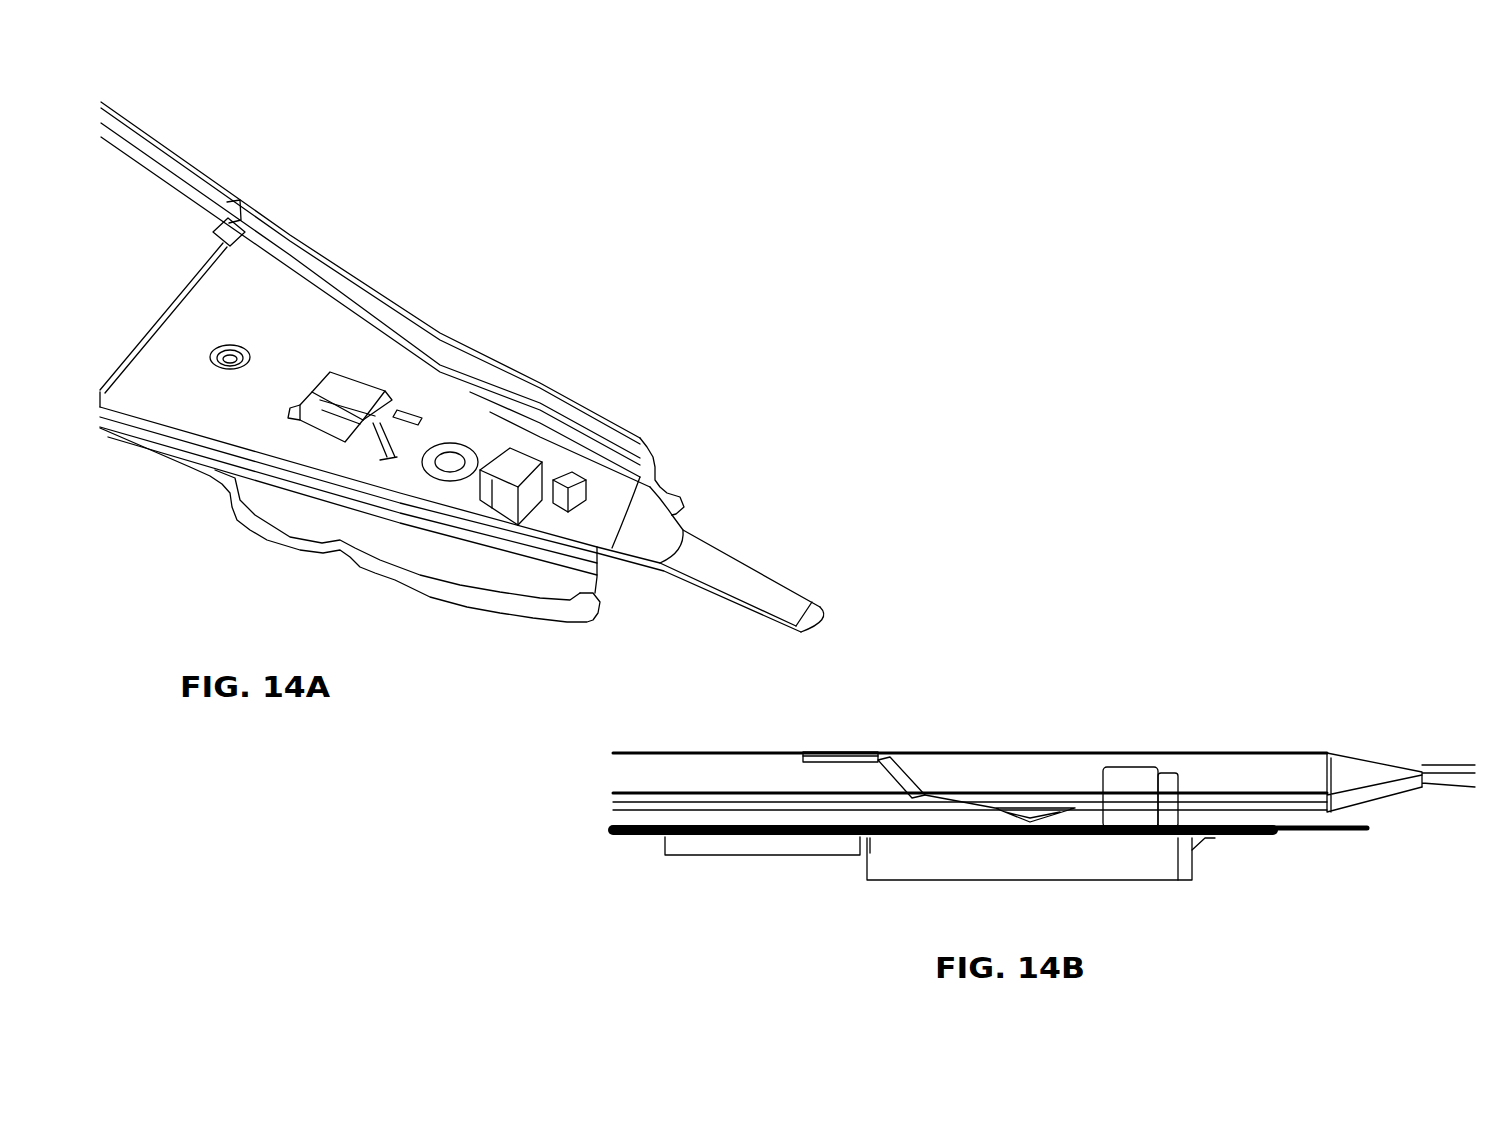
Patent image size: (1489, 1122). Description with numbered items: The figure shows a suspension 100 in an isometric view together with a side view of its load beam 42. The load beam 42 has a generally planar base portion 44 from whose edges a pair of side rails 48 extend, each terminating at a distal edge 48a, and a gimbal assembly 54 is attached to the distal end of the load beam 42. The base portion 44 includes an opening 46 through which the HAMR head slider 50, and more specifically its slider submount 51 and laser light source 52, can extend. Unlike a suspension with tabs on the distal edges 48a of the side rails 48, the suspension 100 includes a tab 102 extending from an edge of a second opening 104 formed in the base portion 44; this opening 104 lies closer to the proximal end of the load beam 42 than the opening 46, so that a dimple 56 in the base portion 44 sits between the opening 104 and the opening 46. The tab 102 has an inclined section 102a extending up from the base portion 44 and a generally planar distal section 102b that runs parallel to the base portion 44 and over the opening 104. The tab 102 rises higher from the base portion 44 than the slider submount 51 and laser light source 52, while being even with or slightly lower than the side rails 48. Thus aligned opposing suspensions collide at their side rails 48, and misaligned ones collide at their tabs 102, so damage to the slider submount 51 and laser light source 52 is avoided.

In FIG. 14A, the suspension 100 is at (541, 270).
In FIG. 14B, the suspension 100 is at (1350, 598).
In FIG. 14A, the load beam 42 is at (287, 234).
In FIG. 14B, the load beam 42 is at (628, 752).
In FIG. 14A, the base portion 44 is at (255, 296).
In FIG. 14A, the opening 46 is at (647, 445).
In FIG. 14A, the side rails 48 is at (378, 306).
In FIG. 14B, the side rails 48 is at (750, 784).
In FIG. 14A, the distal edge 48a is at (347, 270).
In FIG. 14B, the distal edge 48a is at (1025, 750).
In FIG. 14B, the HAMR head slider 50 is at (900, 878).
In FIG. 14A, the slider submount 51 is at (513, 460).
In FIG. 14B, the slider submount 51 is at (1112, 780).
In FIG. 14A, the laser light source 52 is at (582, 492).
In FIG. 14B, the laser light source 52 is at (1168, 782).
In FIG. 14A, the gimbal assembly 54 is at (500, 618).
In FIG. 14A, the dimple 56 is at (450, 447).
In FIG. 14A, the tab 102 is at (395, 371).
In FIG. 14B, the tab 102 is at (931, 735).
In FIG. 14A, the inclined section 102a is at (383, 413).
In FIG. 14B, the inclined section 102a is at (913, 790).
In FIG. 14A, the distal section 102b is at (357, 387).
In FIG. 14B, the distal section 102b is at (836, 750).
In FIG. 14A, the opening 104 is at (295, 410).